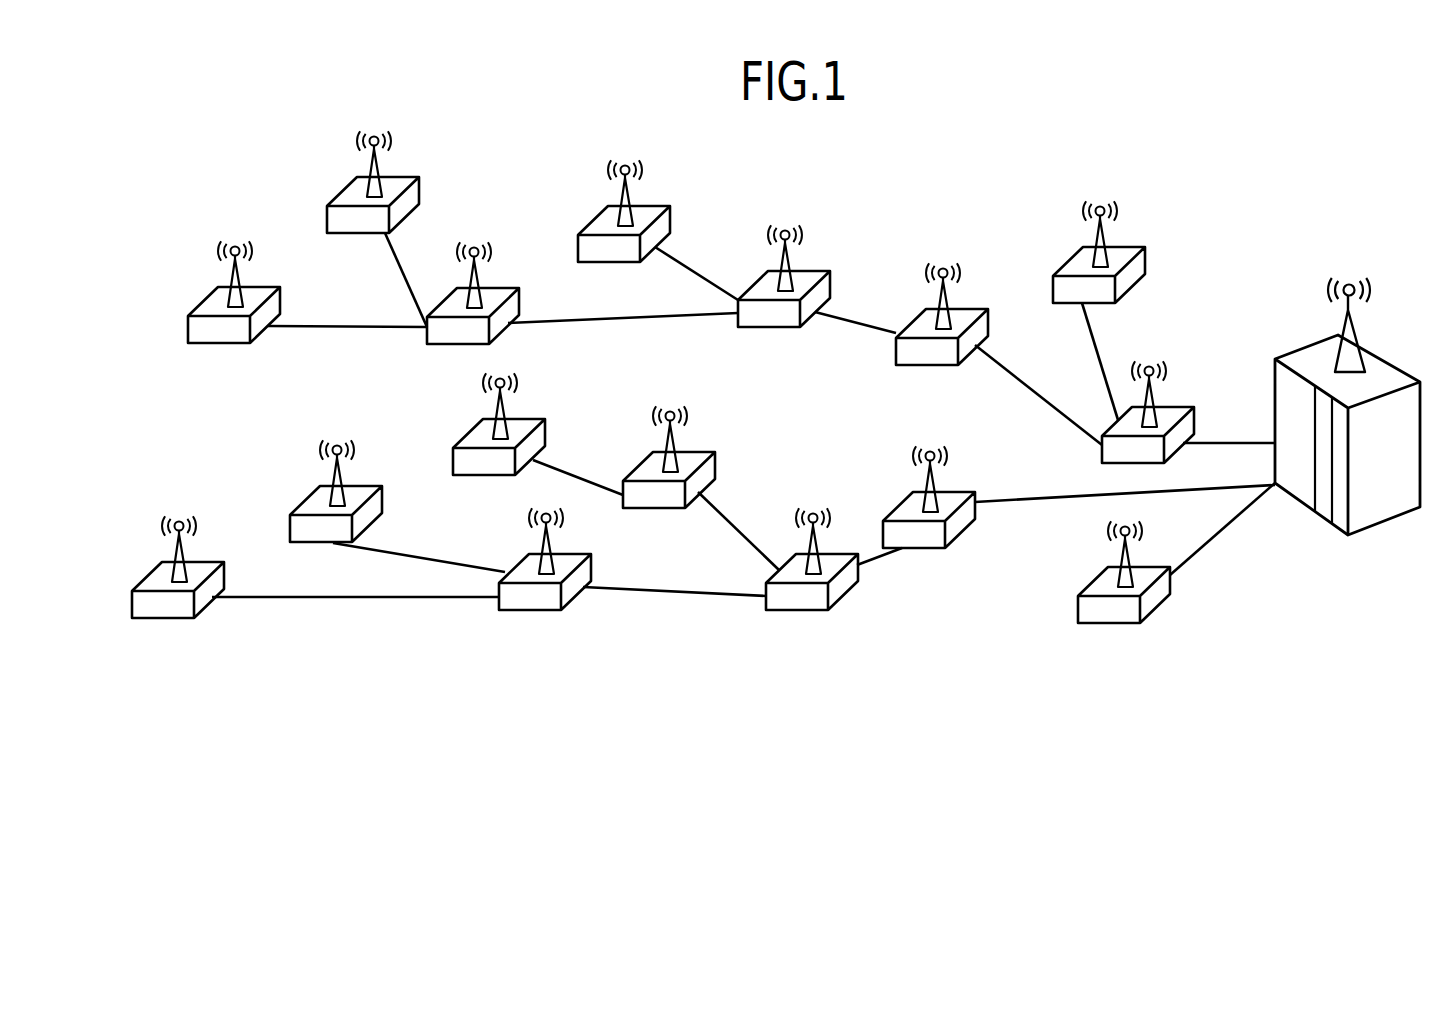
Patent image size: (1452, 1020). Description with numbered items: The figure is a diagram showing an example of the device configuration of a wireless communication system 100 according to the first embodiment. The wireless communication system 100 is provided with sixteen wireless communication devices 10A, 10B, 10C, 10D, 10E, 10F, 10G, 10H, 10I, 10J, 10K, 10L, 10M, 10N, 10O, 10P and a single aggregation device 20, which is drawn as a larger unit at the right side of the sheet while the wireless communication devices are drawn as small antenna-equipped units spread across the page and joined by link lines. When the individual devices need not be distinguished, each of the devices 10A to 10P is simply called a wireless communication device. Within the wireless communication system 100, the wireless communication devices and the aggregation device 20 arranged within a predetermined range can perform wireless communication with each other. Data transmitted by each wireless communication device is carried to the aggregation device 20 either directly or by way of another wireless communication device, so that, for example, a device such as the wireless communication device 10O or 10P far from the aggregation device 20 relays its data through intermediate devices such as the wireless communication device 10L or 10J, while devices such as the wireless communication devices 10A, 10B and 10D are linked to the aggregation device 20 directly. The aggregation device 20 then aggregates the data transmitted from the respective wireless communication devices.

The wireless communication system 100 is at (1234, 184).
The aggregation device 20 is at (1400, 358).
The wireless communication device 10A is at (1185, 407).
The wireless communication device 10B is at (1108, 623).
The wireless communication device 10C is at (1135, 247).
The wireless communication device 10D is at (958, 535).
The wireless communication device 10E is at (978, 309).
The wireless communication device 10F is at (795, 610).
The wireless communication device 10G is at (820, 271).
The wireless communication device 10H is at (706, 452).
The wireless communication device 10I is at (662, 206).
The wireless communication device 10J is at (591, 567).
The wireless communication device 10K is at (535, 419).
The wireless communication device 10L is at (510, 288).
The wireless communication device 10M is at (410, 177).
The wireless communication device 10N is at (373, 486).
The wireless communication device 10O is at (272, 287).
The wireless communication device 10P is at (213, 562).